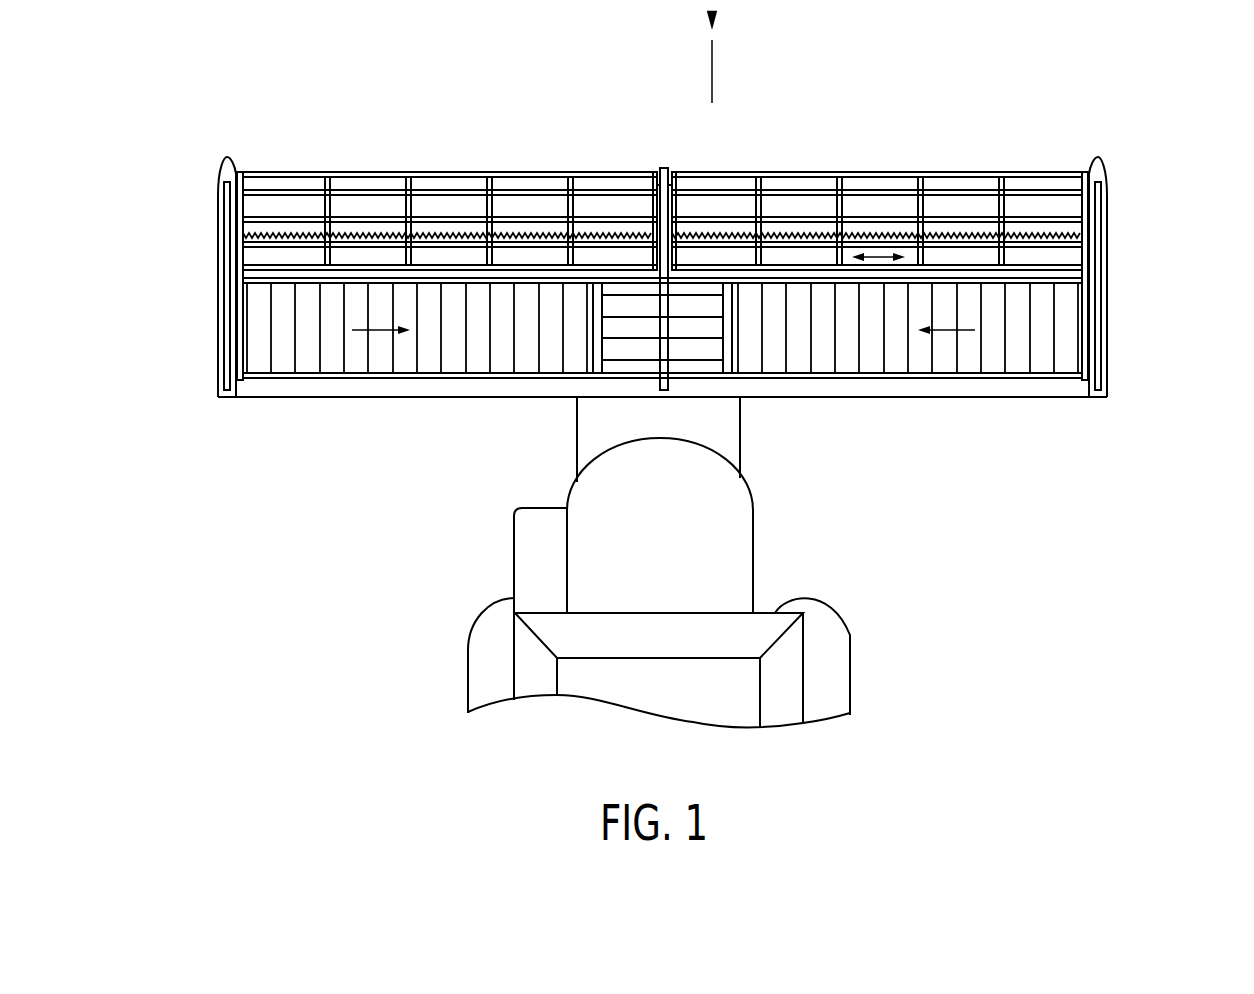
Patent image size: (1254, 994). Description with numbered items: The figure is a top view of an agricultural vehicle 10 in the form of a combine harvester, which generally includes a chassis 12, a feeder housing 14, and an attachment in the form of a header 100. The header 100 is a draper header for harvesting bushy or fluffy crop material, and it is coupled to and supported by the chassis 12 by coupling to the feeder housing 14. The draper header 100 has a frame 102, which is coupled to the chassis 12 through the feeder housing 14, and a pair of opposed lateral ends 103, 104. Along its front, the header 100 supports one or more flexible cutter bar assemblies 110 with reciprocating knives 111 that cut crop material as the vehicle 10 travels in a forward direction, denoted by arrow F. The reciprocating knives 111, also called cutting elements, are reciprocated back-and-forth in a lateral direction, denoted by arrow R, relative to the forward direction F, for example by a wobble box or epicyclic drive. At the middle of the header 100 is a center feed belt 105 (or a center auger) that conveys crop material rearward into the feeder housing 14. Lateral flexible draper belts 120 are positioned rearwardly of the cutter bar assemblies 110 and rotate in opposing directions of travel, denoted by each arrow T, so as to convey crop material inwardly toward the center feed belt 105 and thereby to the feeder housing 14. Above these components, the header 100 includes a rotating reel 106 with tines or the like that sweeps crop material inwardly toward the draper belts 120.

The header 100 is at (1134, 402).
The frame 102 is at (477, 398).
The lateral end 103 is at (200, 329).
The lateral end 104 is at (1135, 329).
The center feed belt 105 is at (628, 300).
The rotating reel 106 is at (958, 172).
The flexible cutter bar assembly 110 is at (366, 207).
The reciprocating knives 111 is at (437, 235).
The flexible draper belt 120 is at (262, 356).
The agricultural vehicle 10 is at (807, 667).
The chassis 12 is at (753, 537).
The feeder housing 14 is at (735, 430).
The direction of travel arrow T is at (380, 332).
The lateral direction arrow R is at (878, 255).
The forward direction arrow F is at (712, 77).